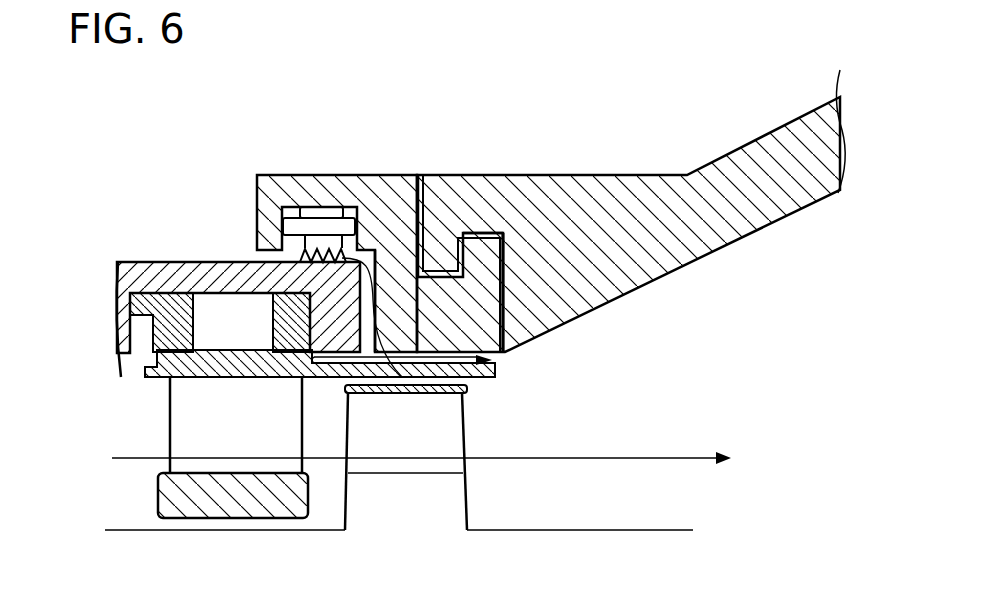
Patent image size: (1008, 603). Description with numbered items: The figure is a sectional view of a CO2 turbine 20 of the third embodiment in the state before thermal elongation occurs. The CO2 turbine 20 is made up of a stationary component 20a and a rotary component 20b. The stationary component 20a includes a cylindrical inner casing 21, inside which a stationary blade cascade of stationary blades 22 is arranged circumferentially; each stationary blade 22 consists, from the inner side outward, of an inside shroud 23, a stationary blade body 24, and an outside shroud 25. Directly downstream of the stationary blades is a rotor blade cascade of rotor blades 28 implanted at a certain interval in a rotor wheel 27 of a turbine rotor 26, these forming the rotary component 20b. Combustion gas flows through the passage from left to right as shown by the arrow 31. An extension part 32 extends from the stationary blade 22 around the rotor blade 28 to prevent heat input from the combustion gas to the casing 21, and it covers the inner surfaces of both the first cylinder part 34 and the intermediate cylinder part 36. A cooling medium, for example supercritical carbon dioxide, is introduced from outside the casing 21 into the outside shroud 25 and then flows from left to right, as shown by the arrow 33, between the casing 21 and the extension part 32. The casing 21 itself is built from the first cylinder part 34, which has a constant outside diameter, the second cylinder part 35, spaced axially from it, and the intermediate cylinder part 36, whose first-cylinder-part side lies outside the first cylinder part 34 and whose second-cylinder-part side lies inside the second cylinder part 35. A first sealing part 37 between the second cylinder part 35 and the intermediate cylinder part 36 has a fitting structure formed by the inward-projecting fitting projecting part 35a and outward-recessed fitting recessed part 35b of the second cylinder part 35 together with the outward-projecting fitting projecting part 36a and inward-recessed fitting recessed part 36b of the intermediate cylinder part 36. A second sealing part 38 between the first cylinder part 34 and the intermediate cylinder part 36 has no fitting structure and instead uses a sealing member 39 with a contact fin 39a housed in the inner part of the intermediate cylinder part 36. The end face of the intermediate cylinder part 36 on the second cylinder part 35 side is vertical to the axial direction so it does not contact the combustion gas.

The CO2 turbine 20 is at (121, 170).
The stationary component 20a is at (754, 288).
The rotary component 20b is at (754, 533).
The inner casing 21 is at (99, 274).
The stationary blade 22 is at (156, 440).
The inside shroud 23 is at (180, 497).
The stationary blade body 24 is at (182, 412).
The outside shroud 25 is at (186, 379).
The turbine rotor 26 is at (560, 540).
The rotor wheel 27 is at (448, 498).
The rotor blade 28 is at (448, 432).
The arrow 31 is at (641, 458).
The extension part 32 is at (497, 373).
The arrow 33 is at (495, 361).
The first cylinder part 34 is at (200, 262).
The second cylinder part 35 is at (668, 190).
The fitting projecting part 35a is at (443, 258).
The fitting recessed part 35b is at (483, 232).
The intermediate cylinder part 36 is at (302, 196).
The fitting projecting part 36a is at (512, 232).
The fitting recessed part 36b is at (393, 252).
The first sealing part 37 is at (518, 227).
The second sealing part 38 is at (266, 225).
The sealing member 39 is at (321, 204).
The contact fin 39a is at (300, 257).